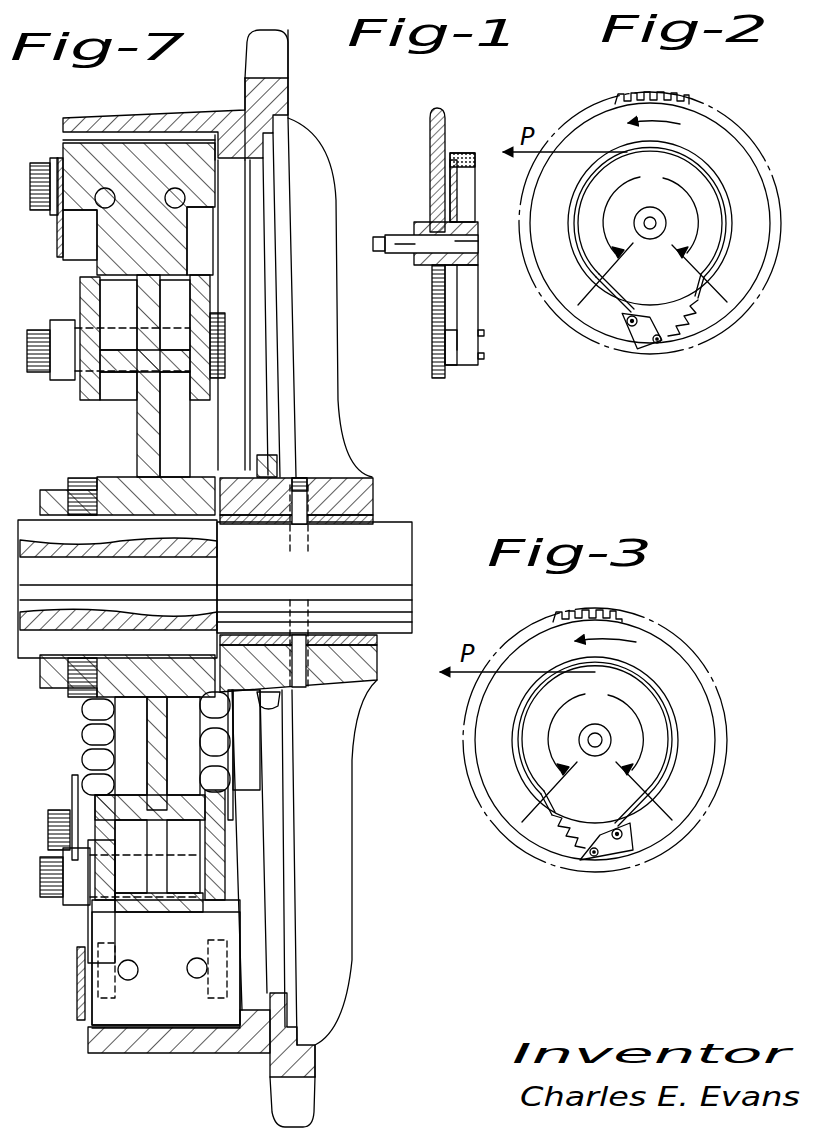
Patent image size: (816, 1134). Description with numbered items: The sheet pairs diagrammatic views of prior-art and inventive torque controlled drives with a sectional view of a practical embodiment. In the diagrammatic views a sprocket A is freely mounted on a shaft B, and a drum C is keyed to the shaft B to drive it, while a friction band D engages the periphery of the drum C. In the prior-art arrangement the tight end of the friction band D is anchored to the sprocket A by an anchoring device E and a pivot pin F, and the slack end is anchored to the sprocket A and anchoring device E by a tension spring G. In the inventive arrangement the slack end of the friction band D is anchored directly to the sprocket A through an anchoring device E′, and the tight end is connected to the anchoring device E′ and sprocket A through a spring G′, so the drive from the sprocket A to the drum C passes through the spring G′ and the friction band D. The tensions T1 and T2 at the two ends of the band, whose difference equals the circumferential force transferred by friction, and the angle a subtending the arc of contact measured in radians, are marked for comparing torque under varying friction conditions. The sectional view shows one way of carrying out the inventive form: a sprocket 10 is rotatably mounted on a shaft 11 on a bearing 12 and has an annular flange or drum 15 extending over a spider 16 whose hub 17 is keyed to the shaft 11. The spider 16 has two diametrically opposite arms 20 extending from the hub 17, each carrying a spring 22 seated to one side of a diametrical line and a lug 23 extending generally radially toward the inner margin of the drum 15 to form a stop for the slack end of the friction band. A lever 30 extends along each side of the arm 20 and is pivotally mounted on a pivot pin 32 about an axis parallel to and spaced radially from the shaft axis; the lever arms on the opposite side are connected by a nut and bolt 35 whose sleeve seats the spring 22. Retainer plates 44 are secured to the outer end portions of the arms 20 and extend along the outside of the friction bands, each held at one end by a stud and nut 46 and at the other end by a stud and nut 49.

In FIG. 7, the sprocket 10 is at (292, 112).
In FIG. 7, the shaft 11 is at (400, 548).
In FIG. 7, the bearing 12 is at (377, 515).
In FIG. 7, the annular flange or drum 15 is at (175, 110).
In FIG. 7, the spider 16 is at (63, 138).
In FIG. 7, the hub 17 is at (62, 480).
In FIG. 7, the arm 20 is at (100, 253).
In FIG. 7, the spring 22 is at (88, 735).
In FIG. 7, the lug 23 is at (125, 150).
In FIG. 7, the lever 30 is at (200, 272).
In FIG. 7, the pivot pin 32 is at (55, 905).
In FIG. 7, the nut and bolt 35 is at (48, 378).
In FIG. 7, the retainer plate 44 is at (57, 245).
In FIG. 7, the stud and nut 46 is at (60, 812).
In FIG. 7, the stud and nut 49 is at (30, 178).
In FIG. 1, the sprocket A is at (430, 137).
In FIG. 2, the sprocket A is at (727, 112).
In FIG. 3, the sprocket A is at (690, 652).
In FIG. 1, the shaft B is at (400, 253).
In FIG. 1, the drum C is at (478, 205).
In FIG. 2, the drum C is at (672, 292).
In FIG. 3, the drum C is at (610, 818).
In FIG. 1, the friction band D is at (465, 153).
In FIG. 2, the friction band D is at (572, 268).
In FIG. 3, the friction band D is at (524, 785).
In FIG. 2, the anchoring device E is at (625, 336).
In FIG. 3, the anchoring device E′ is at (632, 855).
In FIG. 2, the pivot pin F is at (645, 348).
In FIG. 2, the tension spring G is at (688, 328).
In FIG. 3, the spring G′ is at (575, 838).
In FIG. 2, the angle subtending the arc of contact a is at (650, 214).
In FIG. 3, the angle subtending the arc of contact a is at (595, 731).
In FIG. 2, the tension T1 is at (605, 285).
In FIG. 3, the tension T1 is at (549, 804).
In FIG. 2, the tension T2 is at (709, 287).
In FIG. 3, the tension T2 is at (644, 804).